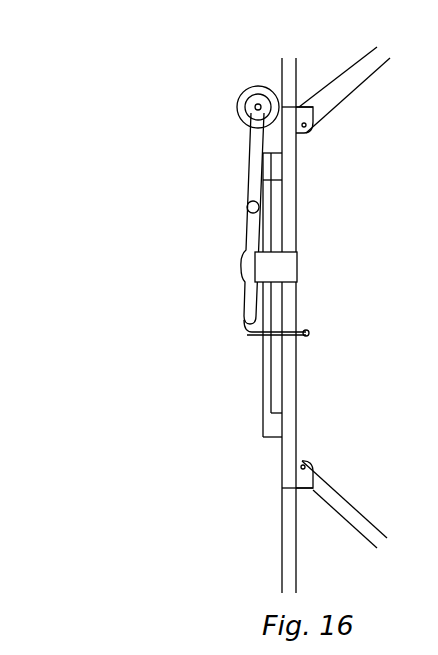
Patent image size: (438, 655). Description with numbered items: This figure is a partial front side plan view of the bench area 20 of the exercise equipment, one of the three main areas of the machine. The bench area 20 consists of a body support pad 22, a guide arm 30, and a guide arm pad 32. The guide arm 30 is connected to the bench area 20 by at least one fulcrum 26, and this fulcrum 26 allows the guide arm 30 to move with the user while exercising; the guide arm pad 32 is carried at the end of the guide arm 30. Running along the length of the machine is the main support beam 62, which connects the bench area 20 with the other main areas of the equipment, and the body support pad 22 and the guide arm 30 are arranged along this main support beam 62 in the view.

The bench area 20 is at (197, 496).
The body support pad 22 is at (275, 387).
The fulcrum 26 is at (292, 267).
The guide arm 30 is at (253, 228).
The guide arm pad 32 is at (257, 103).
The main support beam 62 is at (292, 427).